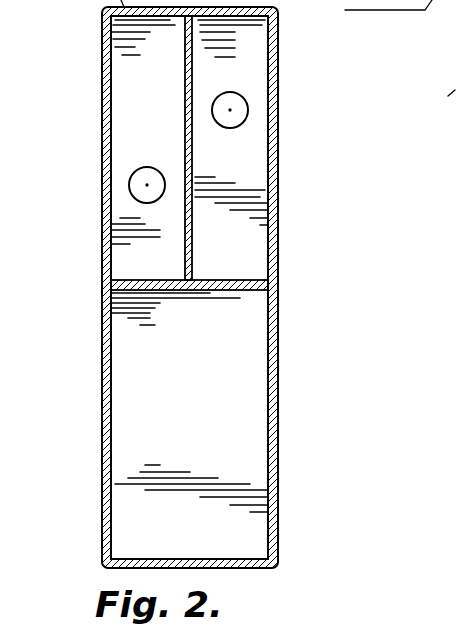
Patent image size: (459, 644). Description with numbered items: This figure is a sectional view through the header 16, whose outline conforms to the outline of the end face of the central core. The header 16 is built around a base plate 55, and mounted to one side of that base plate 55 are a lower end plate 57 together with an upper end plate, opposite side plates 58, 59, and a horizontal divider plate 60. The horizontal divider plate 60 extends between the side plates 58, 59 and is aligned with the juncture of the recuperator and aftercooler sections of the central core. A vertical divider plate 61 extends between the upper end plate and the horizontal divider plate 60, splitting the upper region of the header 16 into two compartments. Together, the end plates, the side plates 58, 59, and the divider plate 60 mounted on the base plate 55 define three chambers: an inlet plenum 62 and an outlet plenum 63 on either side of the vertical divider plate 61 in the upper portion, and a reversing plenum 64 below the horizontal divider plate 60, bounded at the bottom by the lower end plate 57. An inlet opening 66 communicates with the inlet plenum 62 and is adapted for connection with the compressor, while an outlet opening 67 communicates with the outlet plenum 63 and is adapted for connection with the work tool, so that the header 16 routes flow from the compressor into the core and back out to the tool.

The header 16 is at (101, 89).
The base plate 55 is at (202, 425).
The lower end plate 57 is at (245, 558).
The side plate 58 is at (103, 390).
The side plate 59 is at (280, 374).
The horizontal divider plate 60 is at (206, 291).
The vertical divider plate 61 is at (193, 226).
The inlet plenum 62 is at (248, 174).
The outlet plenum 63 is at (131, 103).
The reversing plenum 64 is at (137, 440).
The inlet opening 66 is at (247, 99).
The outlet opening 67 is at (136, 178).